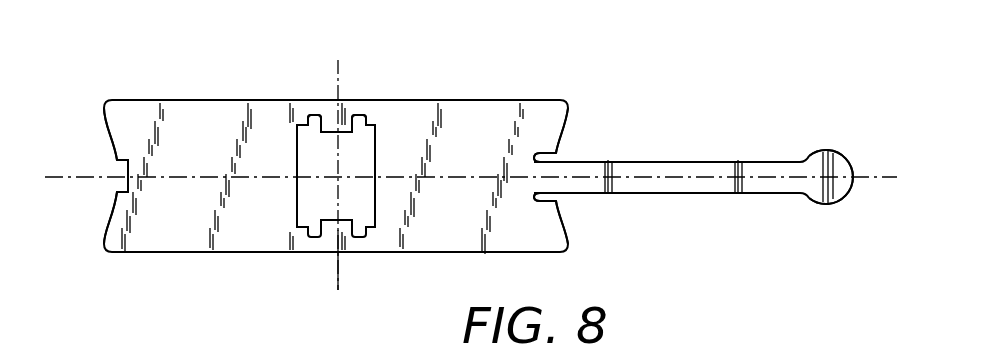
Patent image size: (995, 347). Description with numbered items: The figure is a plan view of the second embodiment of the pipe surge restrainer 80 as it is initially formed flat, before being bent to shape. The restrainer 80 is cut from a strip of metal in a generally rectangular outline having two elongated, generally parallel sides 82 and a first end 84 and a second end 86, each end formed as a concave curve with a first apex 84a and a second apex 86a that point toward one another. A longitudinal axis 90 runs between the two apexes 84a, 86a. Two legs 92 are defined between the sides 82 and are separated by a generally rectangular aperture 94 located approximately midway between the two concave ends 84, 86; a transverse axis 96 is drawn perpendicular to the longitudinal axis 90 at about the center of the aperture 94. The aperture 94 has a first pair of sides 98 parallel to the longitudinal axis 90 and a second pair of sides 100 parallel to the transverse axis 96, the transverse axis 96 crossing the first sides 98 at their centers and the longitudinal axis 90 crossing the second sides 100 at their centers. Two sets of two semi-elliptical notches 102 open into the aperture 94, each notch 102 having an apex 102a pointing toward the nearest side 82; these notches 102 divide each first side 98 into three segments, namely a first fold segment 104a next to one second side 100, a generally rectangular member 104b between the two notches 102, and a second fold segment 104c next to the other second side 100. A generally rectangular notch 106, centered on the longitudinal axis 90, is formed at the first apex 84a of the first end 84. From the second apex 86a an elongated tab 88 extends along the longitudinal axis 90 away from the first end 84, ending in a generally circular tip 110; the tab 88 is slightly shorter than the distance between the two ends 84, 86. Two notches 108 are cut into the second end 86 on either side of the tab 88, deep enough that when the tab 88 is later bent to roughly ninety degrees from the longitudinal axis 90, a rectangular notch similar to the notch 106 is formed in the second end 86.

The pipe surge restrainer 80 is at (743, 89).
The sides 82 is at (153, 99).
The first end 84 is at (112, 216).
The first apex 84a is at (124, 176).
The second end 86 is at (566, 132).
The second apex 86a is at (553, 172).
The tab 88 is at (715, 193).
The longitudinal axis 90 is at (880, 180).
The legs 92 is at (142, 238).
The aperture 94 is at (312, 196).
The transverse axis 96 is at (338, 290).
The first pair of sides 98 is at (352, 140).
The second pair of sides 100 is at (376, 143).
The semi-elliptical notches 102 is at (309, 117).
The apex 102a is at (365, 116).
The first fold segment 104a is at (305, 117).
The rectangular member 104b is at (331, 132).
The second fold segment 104c is at (367, 118).
The rectangular notch 106 is at (124, 173).
The notches 108 is at (560, 152).
The circular tip 110 is at (822, 163).